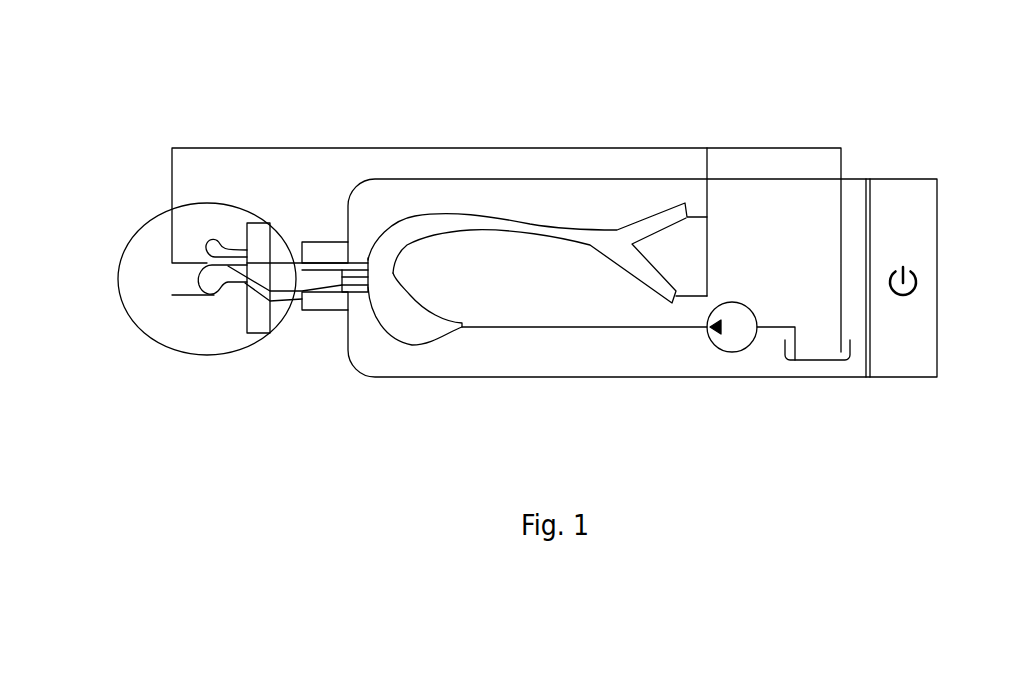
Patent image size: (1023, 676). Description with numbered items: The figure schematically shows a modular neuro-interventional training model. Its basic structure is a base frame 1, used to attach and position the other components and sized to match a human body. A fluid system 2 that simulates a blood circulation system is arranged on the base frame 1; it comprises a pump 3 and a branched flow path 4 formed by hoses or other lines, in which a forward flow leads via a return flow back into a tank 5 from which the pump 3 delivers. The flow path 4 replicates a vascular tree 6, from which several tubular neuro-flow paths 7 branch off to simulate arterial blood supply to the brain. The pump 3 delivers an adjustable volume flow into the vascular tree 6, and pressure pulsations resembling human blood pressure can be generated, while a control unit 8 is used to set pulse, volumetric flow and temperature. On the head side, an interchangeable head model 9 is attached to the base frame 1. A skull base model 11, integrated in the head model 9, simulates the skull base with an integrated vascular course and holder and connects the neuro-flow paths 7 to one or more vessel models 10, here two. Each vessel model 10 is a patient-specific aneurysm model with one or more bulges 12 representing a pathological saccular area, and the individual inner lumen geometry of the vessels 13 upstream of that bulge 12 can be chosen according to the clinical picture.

The base frame 1 is at (853, 203).
The fluid system 2 is at (787, 145).
The pump 3 is at (732, 337).
The flow path 4 is at (491, 328).
The tank 5 is at (819, 363).
The vascular tree 6 is at (582, 228).
The neuro-flow path 7 is at (345, 212).
The control unit 8 is at (920, 345).
The head model 9 is at (155, 236).
The vessel model 10 is at (225, 277).
The skull base model 11 is at (318, 262).
The bulge 12 is at (215, 245).
The vessel 13 is at (231, 248).